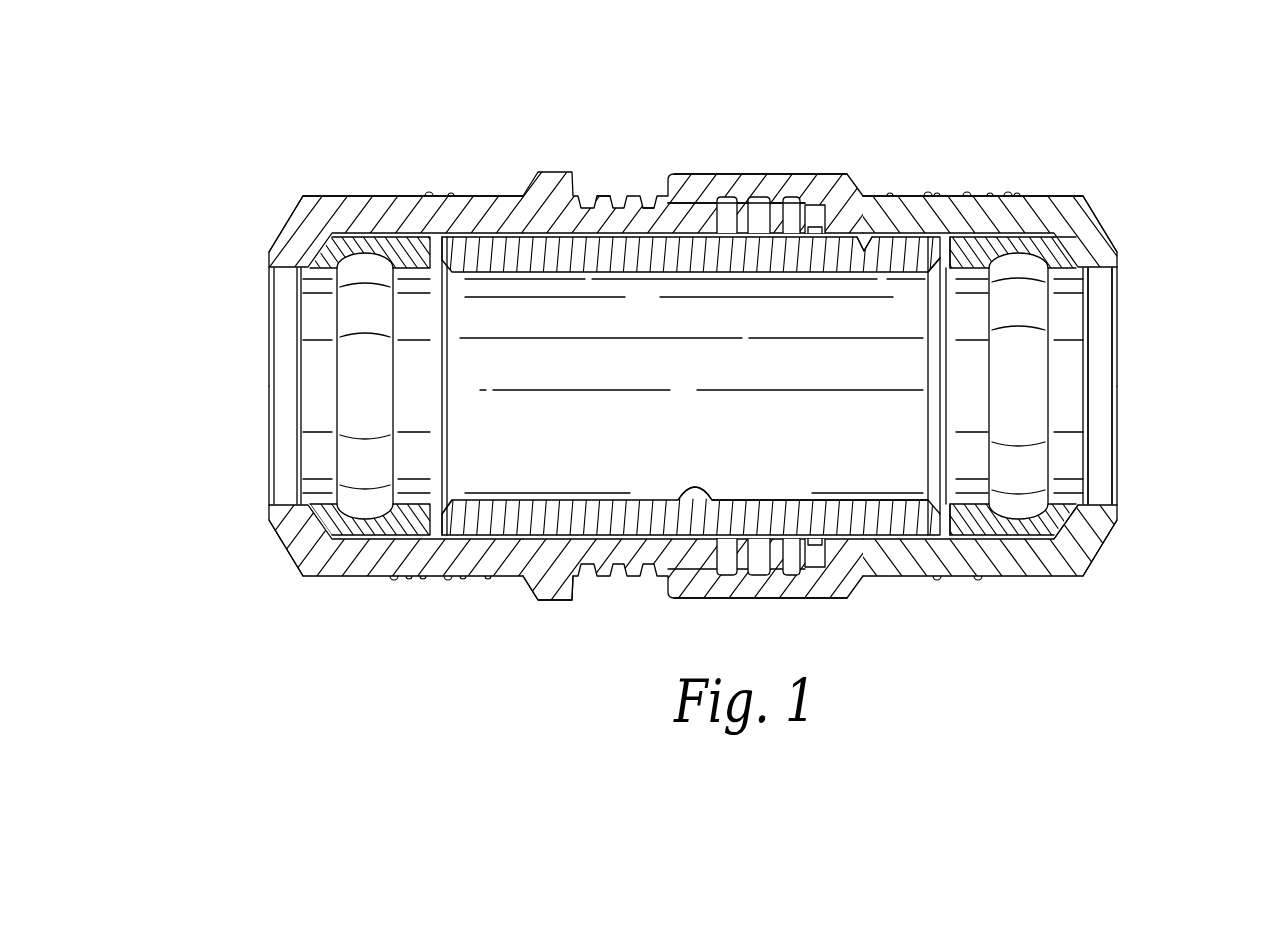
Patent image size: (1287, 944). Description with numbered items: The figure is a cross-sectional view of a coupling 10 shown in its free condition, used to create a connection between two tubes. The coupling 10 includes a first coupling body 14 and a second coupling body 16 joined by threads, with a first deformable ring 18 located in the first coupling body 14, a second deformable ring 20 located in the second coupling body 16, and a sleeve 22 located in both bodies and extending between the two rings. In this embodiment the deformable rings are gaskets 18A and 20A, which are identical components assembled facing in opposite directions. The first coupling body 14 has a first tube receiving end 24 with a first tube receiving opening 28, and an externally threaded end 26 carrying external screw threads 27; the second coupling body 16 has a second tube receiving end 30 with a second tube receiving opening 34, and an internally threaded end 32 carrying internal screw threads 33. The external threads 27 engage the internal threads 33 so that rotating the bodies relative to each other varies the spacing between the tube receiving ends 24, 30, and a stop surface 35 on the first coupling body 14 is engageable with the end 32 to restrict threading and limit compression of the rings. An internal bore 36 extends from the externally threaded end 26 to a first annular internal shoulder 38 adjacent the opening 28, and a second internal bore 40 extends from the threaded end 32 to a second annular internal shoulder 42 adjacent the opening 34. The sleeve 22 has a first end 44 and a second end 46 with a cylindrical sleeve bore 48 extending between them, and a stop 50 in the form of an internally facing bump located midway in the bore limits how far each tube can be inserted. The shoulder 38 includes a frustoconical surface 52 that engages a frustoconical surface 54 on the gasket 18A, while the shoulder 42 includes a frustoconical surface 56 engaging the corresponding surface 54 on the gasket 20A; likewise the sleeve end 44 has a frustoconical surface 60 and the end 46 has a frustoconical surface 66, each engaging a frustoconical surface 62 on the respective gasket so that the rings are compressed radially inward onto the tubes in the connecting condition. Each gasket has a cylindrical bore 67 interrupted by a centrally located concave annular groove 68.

The coupling 10 is at (264, 128).
The first coupling body 14 is at (358, 194).
The second coupling body 16 is at (930, 194).
The first deformable ring 18 is at (330, 577).
The gasket 18A is at (333, 546).
The second deformable ring 20 is at (1085, 578).
The gasket 20A is at (1060, 547).
The sleeve 22 is at (632, 582).
The first tube receiving end 24 is at (290, 214).
The externally threaded end 26 is at (648, 210).
The external screw threads 27 is at (600, 196).
The first tube receiving opening 28 is at (290, 330).
The second tube receiving end 30 is at (1100, 210).
The internally threaded end 32 is at (676, 196).
The internal screw threads 33 is at (783, 196).
The second tube receiving opening 34 is at (1110, 410).
The stop surface 35 is at (588, 598).
The internal bore 36 is at (444, 245).
The first annular internal shoulder 38 is at (300, 487).
The second internal bore 40 is at (866, 245).
The second annular internal shoulder 42 is at (1075, 497).
The first end 44 is at (495, 233).
The second end 46 is at (880, 598).
The cylindrical sleeve bore 48 is at (803, 500).
The stop 50 is at (690, 490).
The frustoconical surface 52 is at (318, 250).
The frustoconical surface 54 is at (310, 525).
The frustoconical surface 56 is at (1070, 537).
The frustoconical surface 60 is at (455, 498).
The frustoconical surface 62 is at (428, 540).
The frustoconical surface 66 is at (932, 282).
The cylindrical bore 67 is at (315, 395).
The annular groove 68 is at (363, 493).